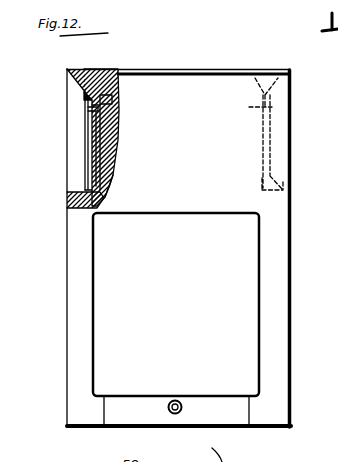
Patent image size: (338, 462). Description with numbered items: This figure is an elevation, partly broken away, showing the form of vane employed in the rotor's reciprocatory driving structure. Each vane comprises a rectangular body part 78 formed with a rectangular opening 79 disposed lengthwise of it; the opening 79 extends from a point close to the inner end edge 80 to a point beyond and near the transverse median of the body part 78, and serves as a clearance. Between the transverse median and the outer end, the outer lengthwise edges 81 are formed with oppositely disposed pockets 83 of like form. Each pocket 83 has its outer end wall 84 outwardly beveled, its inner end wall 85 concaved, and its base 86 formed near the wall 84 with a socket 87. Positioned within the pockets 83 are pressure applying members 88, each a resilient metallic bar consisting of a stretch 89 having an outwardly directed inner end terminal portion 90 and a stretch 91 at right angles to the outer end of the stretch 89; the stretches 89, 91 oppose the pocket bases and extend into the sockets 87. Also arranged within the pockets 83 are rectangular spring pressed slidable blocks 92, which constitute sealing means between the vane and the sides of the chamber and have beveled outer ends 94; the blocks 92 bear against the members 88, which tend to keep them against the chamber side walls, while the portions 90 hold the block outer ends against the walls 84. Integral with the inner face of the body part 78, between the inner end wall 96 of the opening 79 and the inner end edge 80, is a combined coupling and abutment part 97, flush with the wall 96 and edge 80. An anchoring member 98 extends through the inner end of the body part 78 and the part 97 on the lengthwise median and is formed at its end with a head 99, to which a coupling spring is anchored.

The body part 78 is at (276, 266).
The opening 79 is at (176, 304).
The inner end edge 80 is at (258, 429).
The outer lengthwise edges 81 is at (67, 279).
The pockets 83 is at (116, 92).
The outer end wall 84 is at (82, 77).
The inner end wall 85 is at (80, 200).
The base 86 is at (102, 131).
The socket 87 is at (110, 100).
The pressure applying members 88 is at (77, 128).
The stretch 89 is at (104, 148).
The inner end terminal portion 90 is at (112, 184).
The stretch 91 is at (105, 110).
The blocks 92 is at (280, 129).
The outer ends 94 is at (70, 77).
The inner end wall 96 is at (101, 395).
The combined coupling and abutment part 97 is at (205, 410).
The anchoring member 98 is at (188, 421).
The head 99 is at (176, 400).